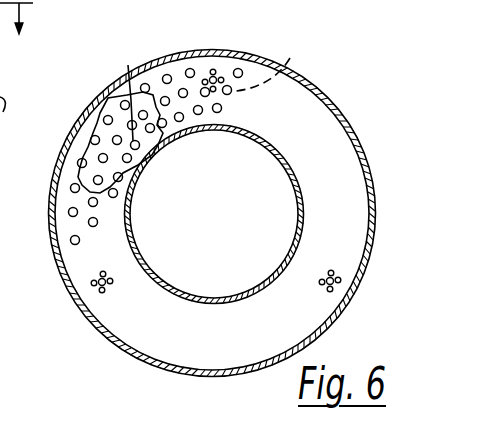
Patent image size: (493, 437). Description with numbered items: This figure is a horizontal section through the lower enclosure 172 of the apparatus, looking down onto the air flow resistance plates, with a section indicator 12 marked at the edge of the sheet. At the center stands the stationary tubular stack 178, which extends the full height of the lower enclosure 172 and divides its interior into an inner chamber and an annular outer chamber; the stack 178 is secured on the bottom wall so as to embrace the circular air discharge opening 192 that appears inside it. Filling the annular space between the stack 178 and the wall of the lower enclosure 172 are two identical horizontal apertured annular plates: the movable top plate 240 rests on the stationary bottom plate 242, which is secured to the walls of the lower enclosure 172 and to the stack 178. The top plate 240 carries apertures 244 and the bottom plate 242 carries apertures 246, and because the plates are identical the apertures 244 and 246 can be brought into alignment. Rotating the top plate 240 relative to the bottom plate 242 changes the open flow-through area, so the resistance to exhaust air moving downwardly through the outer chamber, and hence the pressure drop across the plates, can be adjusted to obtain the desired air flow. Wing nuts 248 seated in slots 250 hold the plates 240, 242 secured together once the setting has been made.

The section direction indicator 12 is at (17, 40).
The lower enclosure 172 is at (84, 313).
The stack 178 is at (143, 256).
The air discharge opening 192 is at (215, 213).
The top plate 240 is at (280, 79).
The bottom plate 242 is at (108, 130).
The apertures 244 is at (227, 86).
The apertures 246 is at (150, 86).
The wing nuts 248 is at (203, 77).
The slots 250 is at (212, 72).